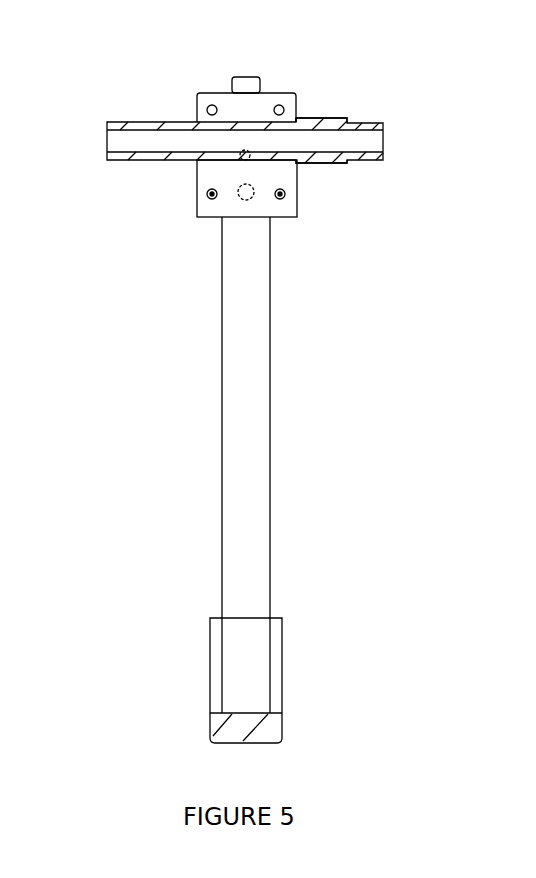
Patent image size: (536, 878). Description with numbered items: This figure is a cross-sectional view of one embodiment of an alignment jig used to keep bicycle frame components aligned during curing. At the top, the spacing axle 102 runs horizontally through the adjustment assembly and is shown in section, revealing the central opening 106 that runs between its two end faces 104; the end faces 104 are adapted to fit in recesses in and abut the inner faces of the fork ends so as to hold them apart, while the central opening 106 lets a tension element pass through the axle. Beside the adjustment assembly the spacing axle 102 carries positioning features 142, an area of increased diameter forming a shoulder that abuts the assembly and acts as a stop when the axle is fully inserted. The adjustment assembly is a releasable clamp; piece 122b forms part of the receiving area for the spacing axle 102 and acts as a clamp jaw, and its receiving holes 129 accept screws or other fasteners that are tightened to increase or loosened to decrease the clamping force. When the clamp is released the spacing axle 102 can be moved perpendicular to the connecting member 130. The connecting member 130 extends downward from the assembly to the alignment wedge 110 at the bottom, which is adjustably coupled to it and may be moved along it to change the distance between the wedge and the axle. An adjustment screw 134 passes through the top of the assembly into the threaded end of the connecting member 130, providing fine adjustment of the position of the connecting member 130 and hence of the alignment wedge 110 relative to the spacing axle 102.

The spacing axle 102 is at (148, 122).
The end faces 104 is at (107, 125).
The central opening 106 is at (370, 142).
The alignment wedge 110 is at (245, 670).
The piece 122b is at (287, 178).
The receiving holes 129 is at (208, 106).
The connecting member 130 is at (233, 363).
The adjustment screw 134 is at (236, 77).
The positioning features 142 is at (340, 118).